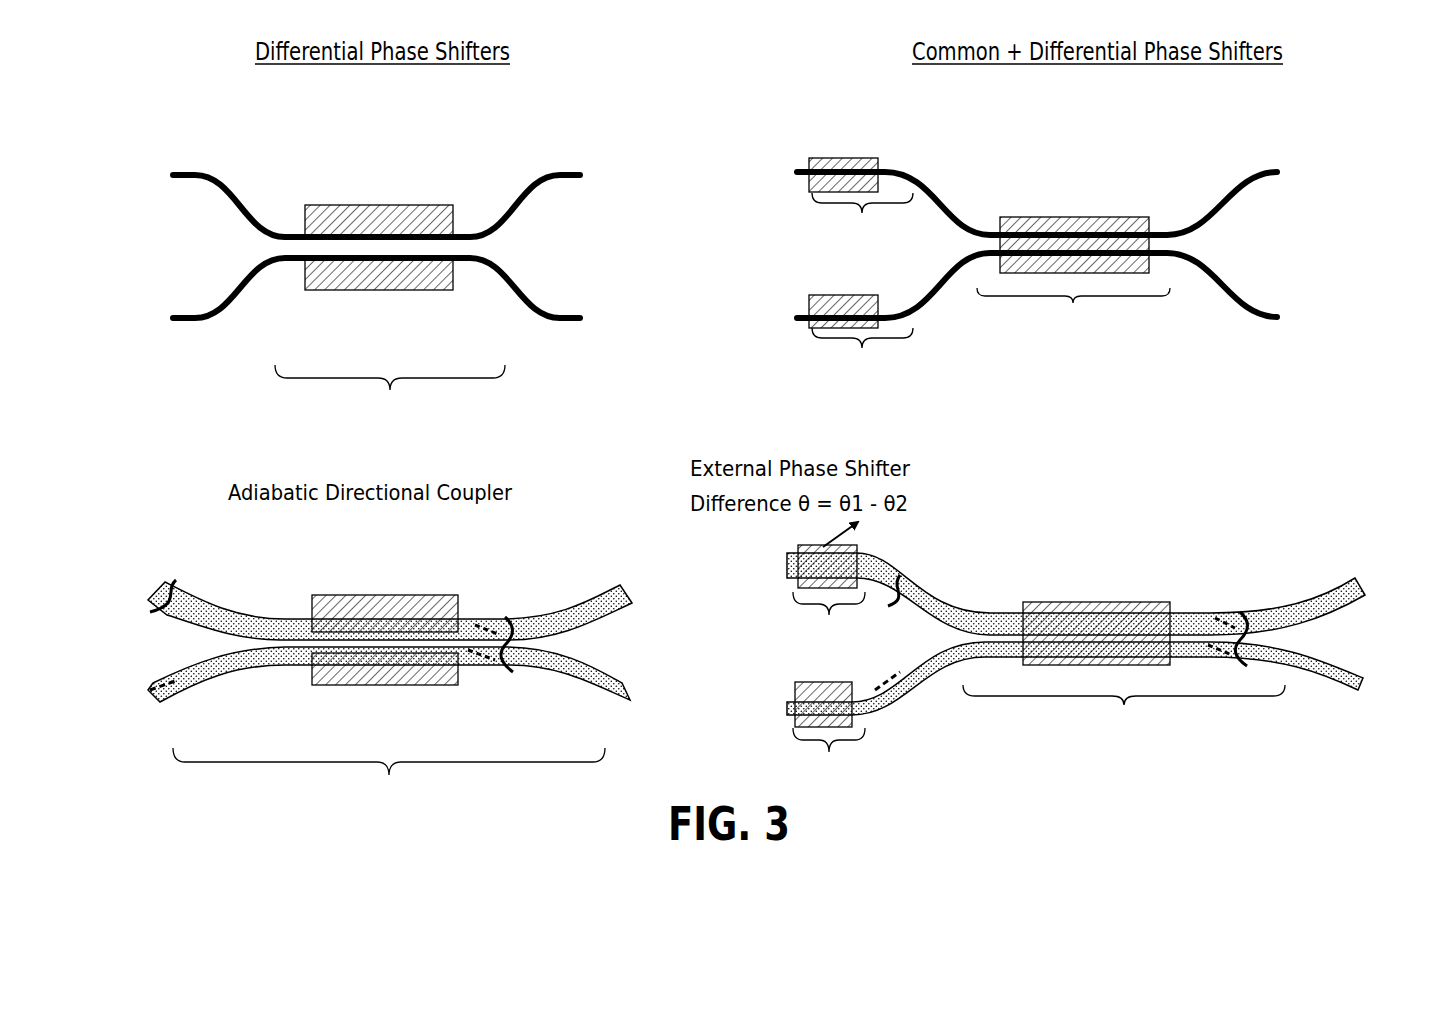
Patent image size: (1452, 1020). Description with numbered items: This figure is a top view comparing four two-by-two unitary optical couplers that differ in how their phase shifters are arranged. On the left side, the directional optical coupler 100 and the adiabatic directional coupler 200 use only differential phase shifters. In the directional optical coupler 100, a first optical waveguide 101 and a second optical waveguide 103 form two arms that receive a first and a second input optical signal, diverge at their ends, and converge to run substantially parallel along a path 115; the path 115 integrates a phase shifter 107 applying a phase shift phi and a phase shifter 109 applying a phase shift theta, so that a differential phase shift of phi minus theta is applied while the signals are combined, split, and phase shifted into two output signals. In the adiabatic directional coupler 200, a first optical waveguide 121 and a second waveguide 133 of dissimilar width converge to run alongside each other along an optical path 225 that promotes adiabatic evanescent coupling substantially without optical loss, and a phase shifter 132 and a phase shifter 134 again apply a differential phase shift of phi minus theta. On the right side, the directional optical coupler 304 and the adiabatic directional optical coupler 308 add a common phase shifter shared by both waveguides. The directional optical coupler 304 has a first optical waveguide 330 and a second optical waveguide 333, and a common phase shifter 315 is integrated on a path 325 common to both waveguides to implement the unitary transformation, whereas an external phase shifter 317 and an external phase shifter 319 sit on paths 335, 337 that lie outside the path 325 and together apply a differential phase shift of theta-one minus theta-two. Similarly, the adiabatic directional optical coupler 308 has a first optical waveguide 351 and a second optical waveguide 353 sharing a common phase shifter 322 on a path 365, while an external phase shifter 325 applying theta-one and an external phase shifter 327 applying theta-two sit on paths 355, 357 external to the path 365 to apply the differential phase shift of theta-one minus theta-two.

The 2×2 unitary directional optical coupler 100 is at (140, 116).
The first optical waveguide 101 is at (203, 175).
The second optical waveguide 103 is at (203, 322).
The phase shifter 107 is at (455, 213).
The phase shifter 109 is at (318, 291).
The path 115 is at (390, 393).
The 2×2 unitary adiabatic directional optical coupler 200 is at (139, 540).
The first optical waveguide 121 is at (207, 613).
The second tapered waveguide 133 is at (215, 672).
The phase shifter 132 is at (458, 602).
The phase shifter 134 is at (313, 686).
The optical path 225 is at (389, 778).
The directional optical coupler 304 is at (1315, 86).
The external phase shifter 317 is at (807, 182).
The external phase shifter 319 is at (822, 293).
The common phase shifter 315 is at (1149, 223).
The first optical waveguide 330 is at (1222, 190).
The second optical waveguide 333 is at (1213, 292).
The path 335 is at (862, 221).
The path 337 is at (862, 354).
The path / external phase shifter 325 is at (857, 548).
The adiabatic directional optical coupler 308 is at (1316, 523).
The external phase shifter 327 is at (855, 718).
The common phase shifter 322 is at (1158, 600).
The first optical waveguide 351 is at (1285, 613).
The second optical waveguide 353 is at (1303, 670).
The path 355 is at (835, 618).
The path 357 is at (835, 755).
The path 365 is at (1124, 711).